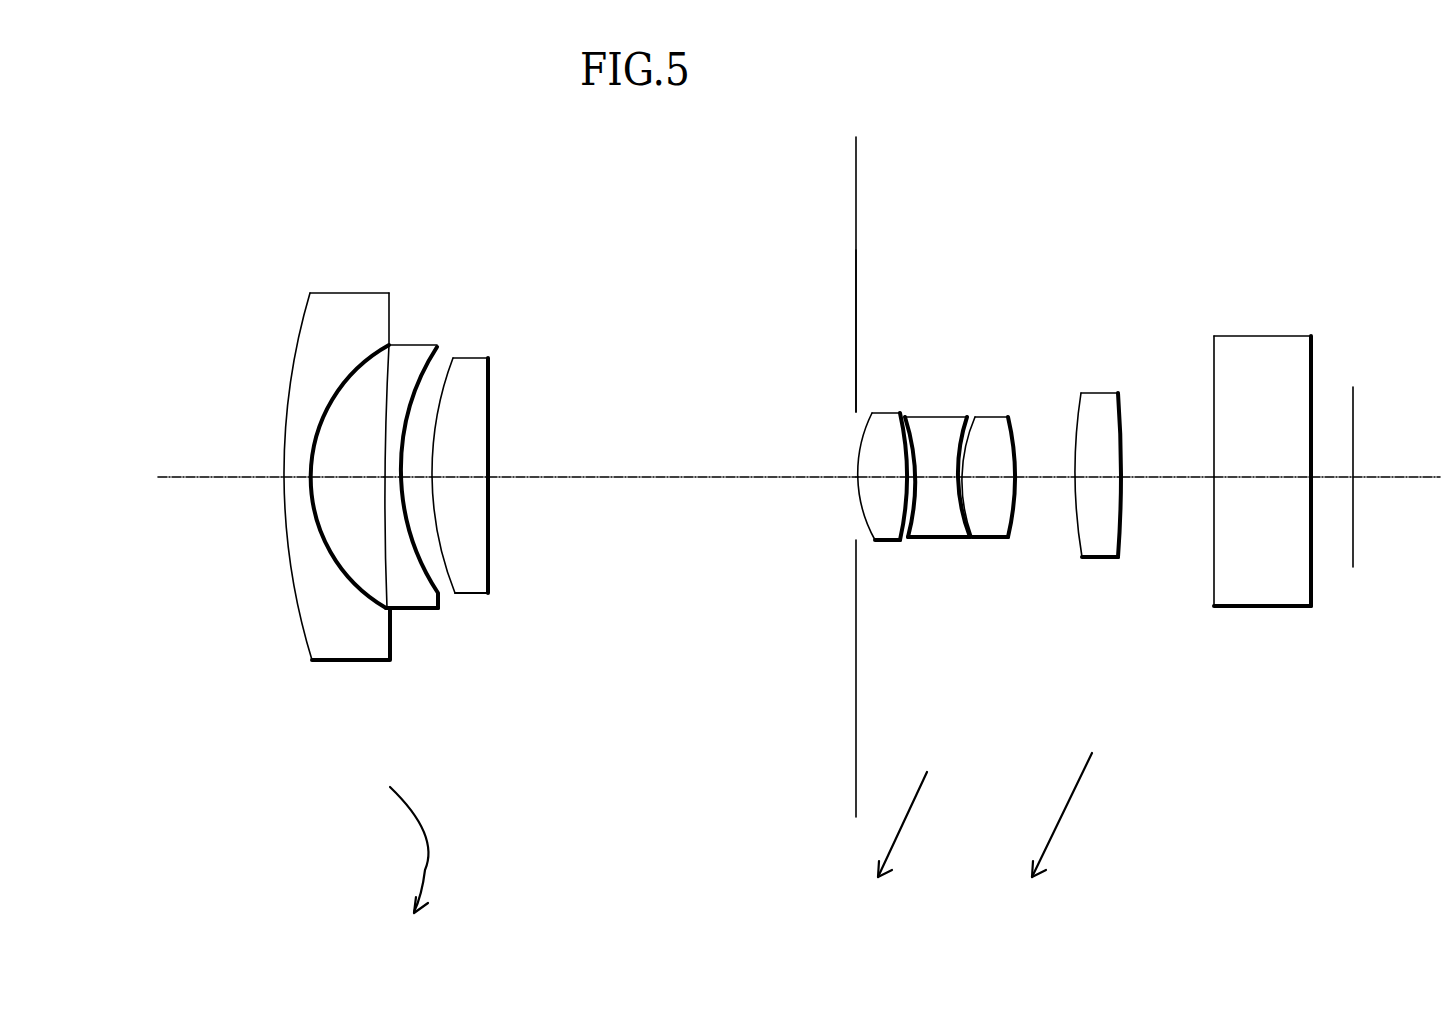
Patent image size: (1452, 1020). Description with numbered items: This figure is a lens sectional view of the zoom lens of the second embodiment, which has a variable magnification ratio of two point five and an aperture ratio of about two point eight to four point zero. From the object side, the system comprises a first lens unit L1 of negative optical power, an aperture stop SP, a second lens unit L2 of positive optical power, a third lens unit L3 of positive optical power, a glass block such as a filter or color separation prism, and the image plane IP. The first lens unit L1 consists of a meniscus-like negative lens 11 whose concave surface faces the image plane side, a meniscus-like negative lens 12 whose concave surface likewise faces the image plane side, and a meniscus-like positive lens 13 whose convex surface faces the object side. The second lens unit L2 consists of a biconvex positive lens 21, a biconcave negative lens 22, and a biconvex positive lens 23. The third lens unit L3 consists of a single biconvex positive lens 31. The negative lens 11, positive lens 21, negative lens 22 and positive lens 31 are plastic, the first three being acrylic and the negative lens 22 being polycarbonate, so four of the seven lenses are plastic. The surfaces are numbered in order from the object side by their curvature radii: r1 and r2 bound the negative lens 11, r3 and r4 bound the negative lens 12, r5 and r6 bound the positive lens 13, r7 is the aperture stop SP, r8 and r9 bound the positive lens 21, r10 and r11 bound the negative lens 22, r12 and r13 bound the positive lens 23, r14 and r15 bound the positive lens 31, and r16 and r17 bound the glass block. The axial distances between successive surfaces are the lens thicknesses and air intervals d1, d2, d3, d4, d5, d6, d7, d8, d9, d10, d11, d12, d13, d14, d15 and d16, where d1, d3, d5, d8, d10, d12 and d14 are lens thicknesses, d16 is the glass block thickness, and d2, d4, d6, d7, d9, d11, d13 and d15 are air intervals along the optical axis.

The first lens unit L1 is at (549, 208).
The second lens unit L2 is at (1053, 283).
The third lens unit L3 is at (1137, 283).
The aperture stop SP is at (857, 459).
The image plane IP is at (1355, 400).
The negative lens 11 is at (333, 483).
The negative lens 12 is at (420, 493).
The positive lens 13 is at (487, 478).
The positive lens 21 is at (888, 483).
The negative lens 22 is at (947, 469).
The positive lens 23 is at (1012, 478).
The positive lens 31 is at (1107, 485).
The curvature radius of first surface r1 is at (305, 310).
The curvature radius of second surface r2 is at (390, 296).
The curvature radius of third surface r3 is at (384, 404).
The curvature radius of fourth surface r4 is at (437, 362).
The curvature radius of fifth surface r5 is at (447, 372).
The curvature radius of sixth surface r6 is at (496, 368).
The curvature radius of seventh surface r7 is at (855, 283).
The curvature radius of eighth surface r8 is at (868, 414).
The curvature radius of ninth surface r9 is at (903, 414).
The curvature radius of tenth surface r10 is at (922, 414).
The curvature radius of eleventh surface r11 is at (953, 417).
The curvature radius of twelfth surface r12 is at (1007, 414).
The curvature radius of thirteenth surface r13 is at (1013, 419).
The curvature radius of fourteenth surface r14 is at (1078, 402).
The curvature radius of fifteenth surface r15 is at (1120, 399).
The curvature radius of sixteenth surface r16 is at (1214, 363).
The curvature radius of seventeenth surface r17 is at (1311, 347).
The lens thickness d1 is at (300, 478).
The air interval d2 is at (348, 478).
The lens thickness d3 is at (390, 478).
The air interval d4 is at (418, 478).
The lens thickness d5 is at (460, 478).
The air interval d6 is at (667, 478).
The air interval d7 is at (852, 478).
The lens thickness d8 is at (877, 478).
The air interval d9 is at (912, 478).
The lens thickness d10 is at (938, 478).
The air interval d11 is at (962, 478).
The lens thickness d12 is at (990, 478).
The air interval d13 is at (1043, 478).
The lens thickness d14 is at (1096, 478).
The air interval d15 is at (1168, 478).
The glass block thickness d16 is at (1261, 478).